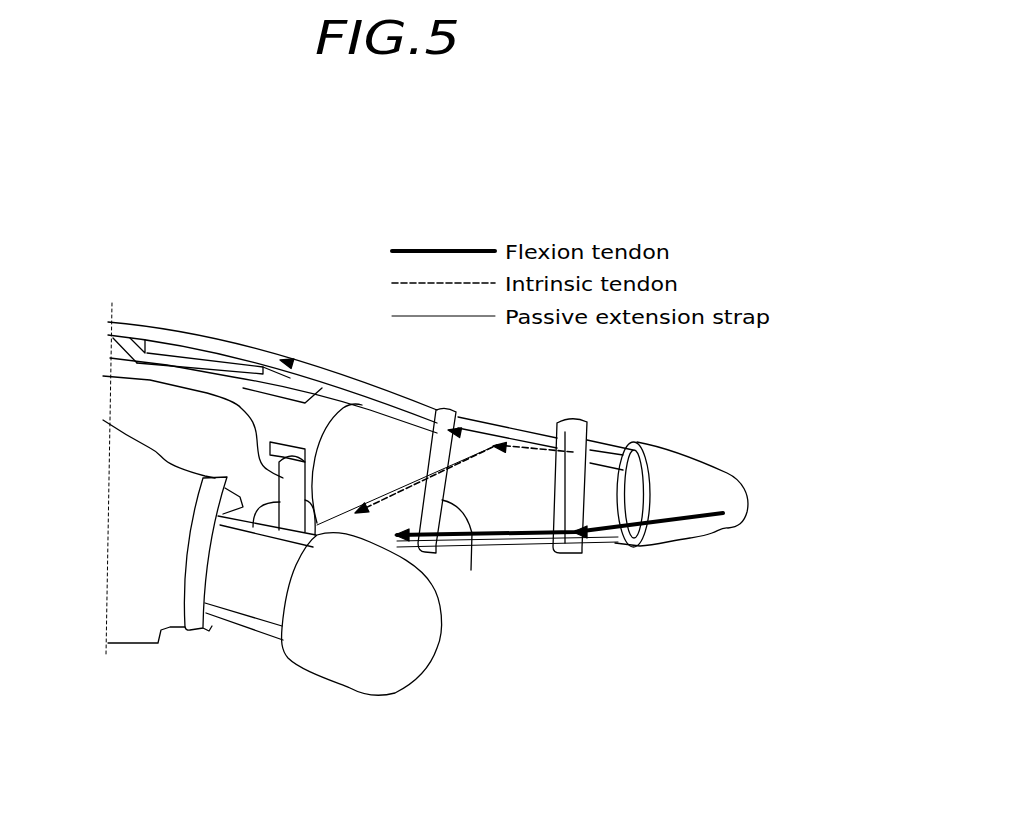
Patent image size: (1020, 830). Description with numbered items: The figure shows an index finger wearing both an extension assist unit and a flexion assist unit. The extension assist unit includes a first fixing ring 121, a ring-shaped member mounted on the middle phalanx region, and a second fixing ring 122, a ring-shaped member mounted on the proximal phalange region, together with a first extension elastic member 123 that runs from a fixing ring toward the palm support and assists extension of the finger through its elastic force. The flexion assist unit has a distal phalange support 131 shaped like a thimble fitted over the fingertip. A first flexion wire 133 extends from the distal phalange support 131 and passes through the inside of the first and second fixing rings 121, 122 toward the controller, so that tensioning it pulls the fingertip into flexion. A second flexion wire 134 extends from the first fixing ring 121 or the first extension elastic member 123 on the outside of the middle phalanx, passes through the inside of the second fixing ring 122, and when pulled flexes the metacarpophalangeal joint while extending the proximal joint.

The first fixing ring 121 is at (573, 548).
The second fixing ring 122 is at (193, 620).
The first extension elastic member 123 is at (513, 430).
The distal phalange support 131 is at (357, 680).
The first flexion wire 133 is at (603, 547).
The second flexion wire 134 is at (539, 438).